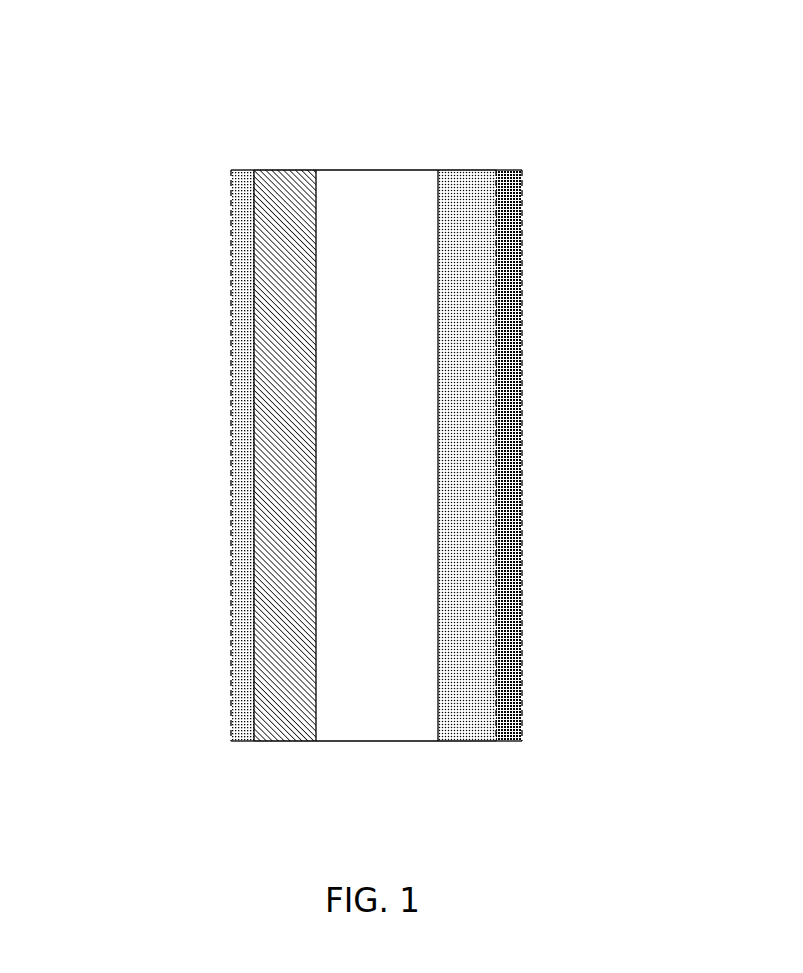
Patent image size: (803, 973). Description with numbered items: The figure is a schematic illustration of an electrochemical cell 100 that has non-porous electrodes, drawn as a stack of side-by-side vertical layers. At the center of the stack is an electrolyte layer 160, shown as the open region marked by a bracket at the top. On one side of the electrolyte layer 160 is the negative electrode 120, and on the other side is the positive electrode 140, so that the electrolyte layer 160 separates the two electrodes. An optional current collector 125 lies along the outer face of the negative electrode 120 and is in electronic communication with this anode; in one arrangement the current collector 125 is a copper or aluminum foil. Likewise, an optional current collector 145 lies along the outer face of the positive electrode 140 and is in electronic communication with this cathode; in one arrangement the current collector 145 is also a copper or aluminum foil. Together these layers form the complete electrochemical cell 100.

The electrochemical cell 100 is at (364, 373).
The negative electrode 120 is at (273, 417).
The current collector 125 is at (242, 578).
The positive electrode 140 is at (472, 377).
The current collector 145 is at (505, 533).
The electrolyte layer 160 is at (437, 165).